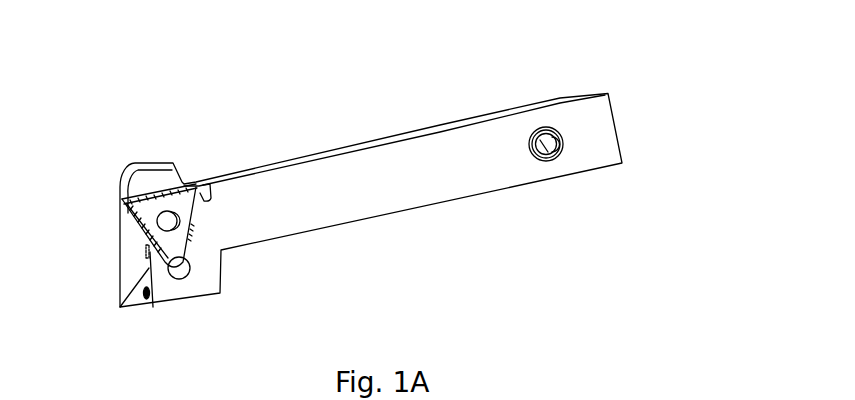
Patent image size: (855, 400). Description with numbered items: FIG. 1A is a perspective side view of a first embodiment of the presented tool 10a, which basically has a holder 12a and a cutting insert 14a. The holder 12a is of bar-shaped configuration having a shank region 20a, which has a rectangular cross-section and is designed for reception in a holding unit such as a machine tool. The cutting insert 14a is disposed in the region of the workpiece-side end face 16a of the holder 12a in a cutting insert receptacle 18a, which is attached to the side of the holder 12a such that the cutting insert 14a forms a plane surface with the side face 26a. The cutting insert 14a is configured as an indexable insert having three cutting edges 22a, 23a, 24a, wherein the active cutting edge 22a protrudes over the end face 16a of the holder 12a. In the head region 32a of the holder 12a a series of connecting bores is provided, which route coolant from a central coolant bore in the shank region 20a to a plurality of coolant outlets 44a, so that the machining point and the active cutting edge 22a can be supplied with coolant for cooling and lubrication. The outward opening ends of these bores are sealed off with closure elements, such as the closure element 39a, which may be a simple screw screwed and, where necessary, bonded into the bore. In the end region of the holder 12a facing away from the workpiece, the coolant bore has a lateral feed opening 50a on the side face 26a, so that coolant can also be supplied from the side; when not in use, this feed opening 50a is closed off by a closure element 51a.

The tool 10a is at (657, 51).
The holder 12a is at (628, 162).
The cutting insert 14a is at (146, 210).
The end face 16a is at (124, 272).
The cutting insert receptacle 18a is at (198, 230).
The shank region 20a is at (397, 213).
The active cutting edge 22a is at (150, 214).
The cutting edge 23a is at (191, 194).
The cutting edge 24a is at (179, 282).
The side face 26a is at (440, 150).
The head region 32a is at (221, 294).
The closure element 39a is at (145, 300).
The coolant outlets 44a is at (148, 250).
The lateral feed opening 50a is at (555, 158).
The closure element 51a is at (543, 147).